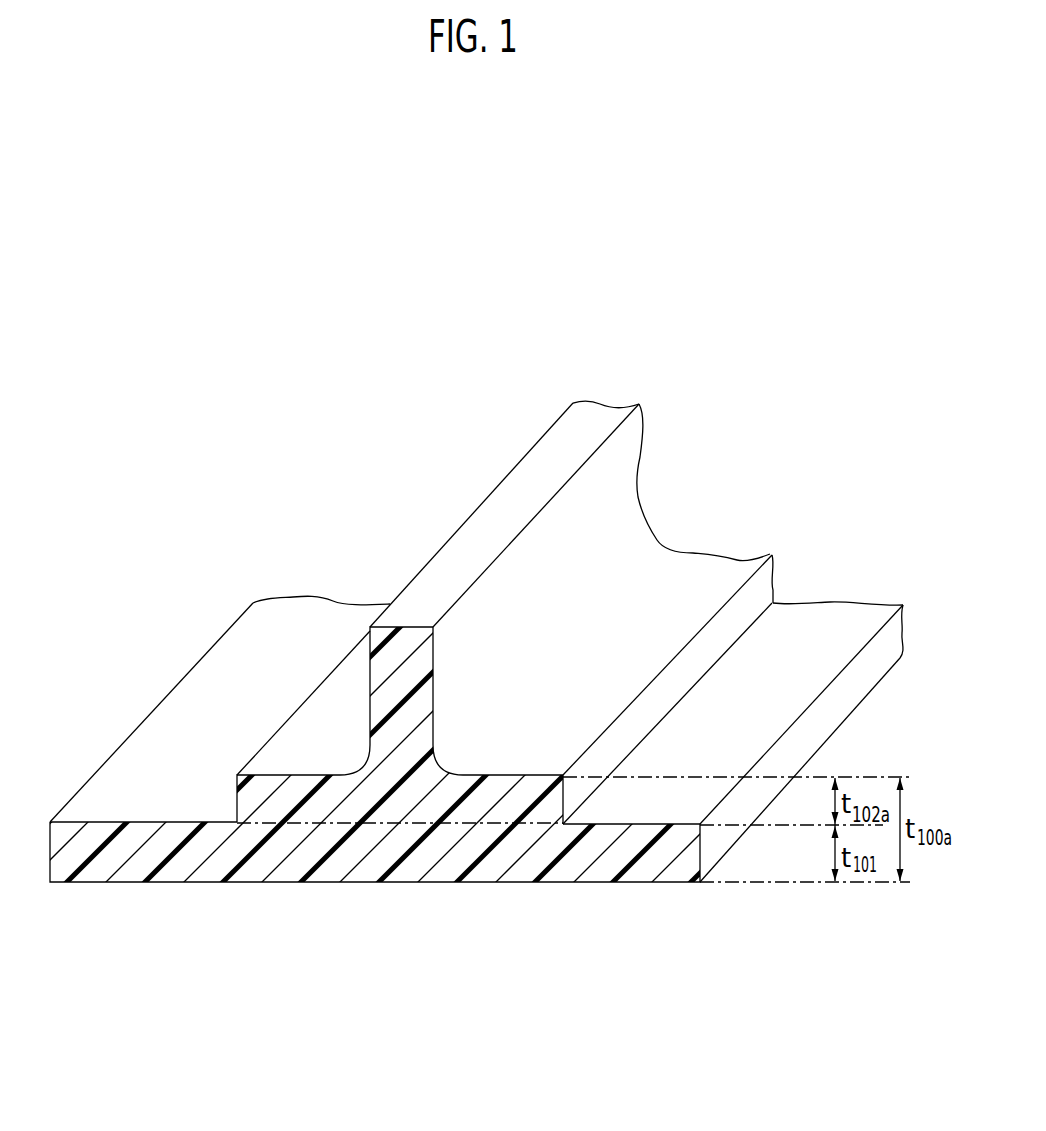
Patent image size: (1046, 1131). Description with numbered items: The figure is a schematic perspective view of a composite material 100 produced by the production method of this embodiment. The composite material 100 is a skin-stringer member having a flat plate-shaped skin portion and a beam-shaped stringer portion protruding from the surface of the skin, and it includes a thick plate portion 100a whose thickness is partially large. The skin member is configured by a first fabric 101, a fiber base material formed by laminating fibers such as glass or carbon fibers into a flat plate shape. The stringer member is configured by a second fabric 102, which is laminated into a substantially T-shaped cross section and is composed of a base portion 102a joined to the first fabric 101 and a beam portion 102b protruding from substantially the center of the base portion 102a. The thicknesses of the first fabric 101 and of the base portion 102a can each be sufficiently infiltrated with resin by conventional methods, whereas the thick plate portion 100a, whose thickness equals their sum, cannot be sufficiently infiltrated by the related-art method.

The composite material 100 is at (506, 687).
The thick plate portion 100a is at (517, 836).
The first fabric 101 is at (634, 890).
The second fabric 102 is at (480, 594).
The base portion 102a is at (322, 715).
The beam portion 102b is at (500, 515).